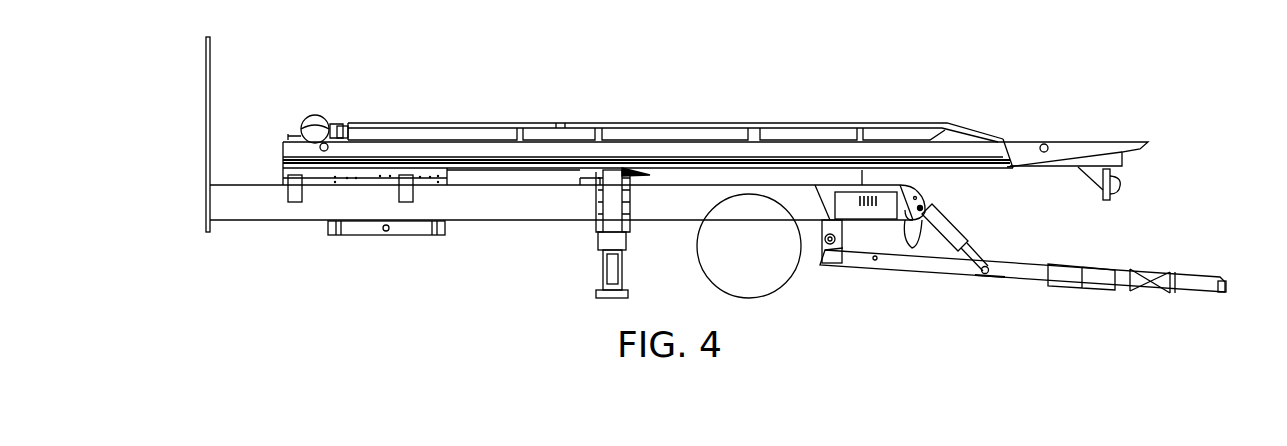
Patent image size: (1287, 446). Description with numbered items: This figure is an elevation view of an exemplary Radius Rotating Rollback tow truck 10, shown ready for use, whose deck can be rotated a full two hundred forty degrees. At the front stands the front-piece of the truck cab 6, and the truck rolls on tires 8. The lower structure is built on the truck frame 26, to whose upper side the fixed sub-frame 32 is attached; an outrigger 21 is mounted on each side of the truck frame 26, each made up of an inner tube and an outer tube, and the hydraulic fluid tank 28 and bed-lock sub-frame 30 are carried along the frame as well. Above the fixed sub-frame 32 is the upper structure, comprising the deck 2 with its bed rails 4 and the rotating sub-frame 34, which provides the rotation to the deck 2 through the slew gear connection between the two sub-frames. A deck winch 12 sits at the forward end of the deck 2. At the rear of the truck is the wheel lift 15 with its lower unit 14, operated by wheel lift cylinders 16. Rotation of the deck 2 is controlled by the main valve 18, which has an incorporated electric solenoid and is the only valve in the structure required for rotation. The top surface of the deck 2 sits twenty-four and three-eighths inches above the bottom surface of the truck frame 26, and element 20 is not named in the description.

The deck 2 is at (1025, 141).
The bed rails 4 is at (448, 122).
The front-piece of truck cab 6 is at (209, 78).
The tires 8 is at (766, 278).
The tow truck 10 is at (206, 56).
The deck winch 12 is at (320, 117).
The lower unit of wheel lift 14 is at (990, 251).
The wheel lift 15 is at (1208, 277).
The wheel lift cylinders 16 is at (930, 216).
The main valve 18 is at (860, 212).
The wheel lift pivot 20 is at (817, 250).
The outriggers 21 is at (590, 258).
The truck frame 26 is at (265, 212).
The hydraulic fluid tank 28 is at (367, 236).
The bed-lock sub-frame 30 is at (443, 188).
The fixed sub-frame 32 is at (793, 167).
The rotating sub-frame 34 is at (600, 134).